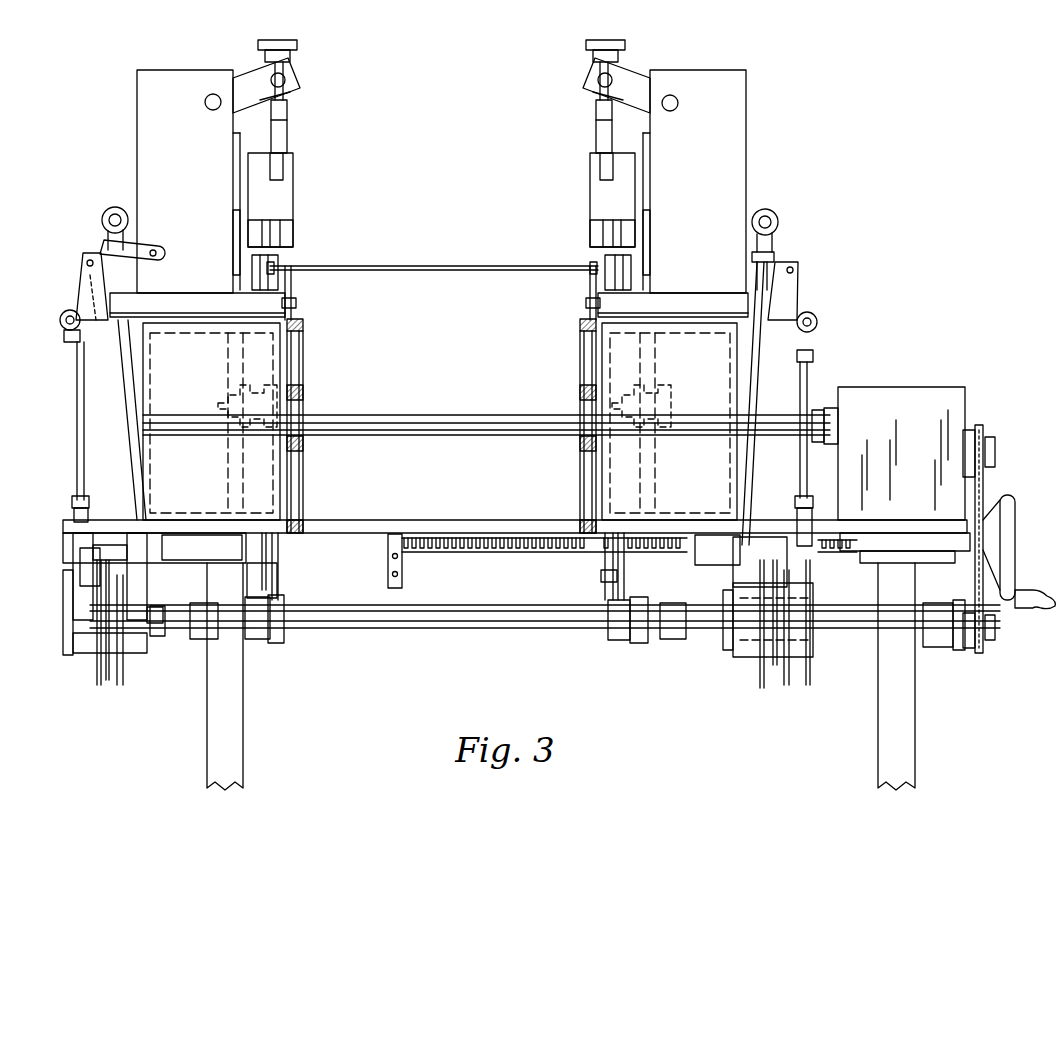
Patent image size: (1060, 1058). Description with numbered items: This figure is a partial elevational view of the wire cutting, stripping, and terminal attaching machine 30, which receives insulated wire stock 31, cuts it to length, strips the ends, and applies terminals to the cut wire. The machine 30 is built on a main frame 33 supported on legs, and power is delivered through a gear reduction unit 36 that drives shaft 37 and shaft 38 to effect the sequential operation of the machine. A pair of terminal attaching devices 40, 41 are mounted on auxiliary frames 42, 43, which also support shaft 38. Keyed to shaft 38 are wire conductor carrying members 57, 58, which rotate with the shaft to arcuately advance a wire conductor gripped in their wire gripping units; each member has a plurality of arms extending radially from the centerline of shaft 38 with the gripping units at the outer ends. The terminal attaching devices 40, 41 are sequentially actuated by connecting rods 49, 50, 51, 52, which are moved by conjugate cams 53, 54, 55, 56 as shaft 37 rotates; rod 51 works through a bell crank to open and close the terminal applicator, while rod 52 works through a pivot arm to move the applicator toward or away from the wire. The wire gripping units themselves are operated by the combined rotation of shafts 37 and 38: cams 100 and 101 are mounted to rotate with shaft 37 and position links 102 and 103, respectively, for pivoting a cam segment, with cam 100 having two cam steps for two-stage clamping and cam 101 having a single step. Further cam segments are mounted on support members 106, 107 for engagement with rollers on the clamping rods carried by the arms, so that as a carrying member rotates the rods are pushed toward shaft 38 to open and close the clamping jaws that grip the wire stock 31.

The wire cutting, stripping, and terminal attaching machine 30 is at (846, 343).
The insulated wire stock 31 is at (455, 266).
The main frame 33 is at (368, 528).
The gear reduction unit 36 is at (918, 410).
The shaft 37 is at (540, 630).
The shaft 38 is at (444, 418).
The terminal attaching device 40 is at (170, 95).
The terminal attaching device 41 is at (708, 93).
The auxiliary frame 42 is at (168, 377).
The auxiliary frame 43 is at (708, 381).
The connecting rod 49 is at (78, 407).
The connecting rod 50 is at (133, 445).
The connecting rod 51 is at (757, 388).
The connecting rod 52 is at (812, 380).
The conjugate cam 53 is at (99, 684).
The conjugate cam 54 is at (121, 684).
The conjugate cam 55 is at (766, 688).
The conjugate cam 56 is at (805, 688).
The wire conductor carrying member 57 is at (305, 326).
The wire conductor carrying member 58 is at (578, 338).
The cam 100 is at (280, 600).
The cam 101 is at (607, 592).
The link 102 is at (278, 546).
The link 103 is at (607, 556).
The support member 106 is at (268, 556).
The support member 107 is at (624, 571).